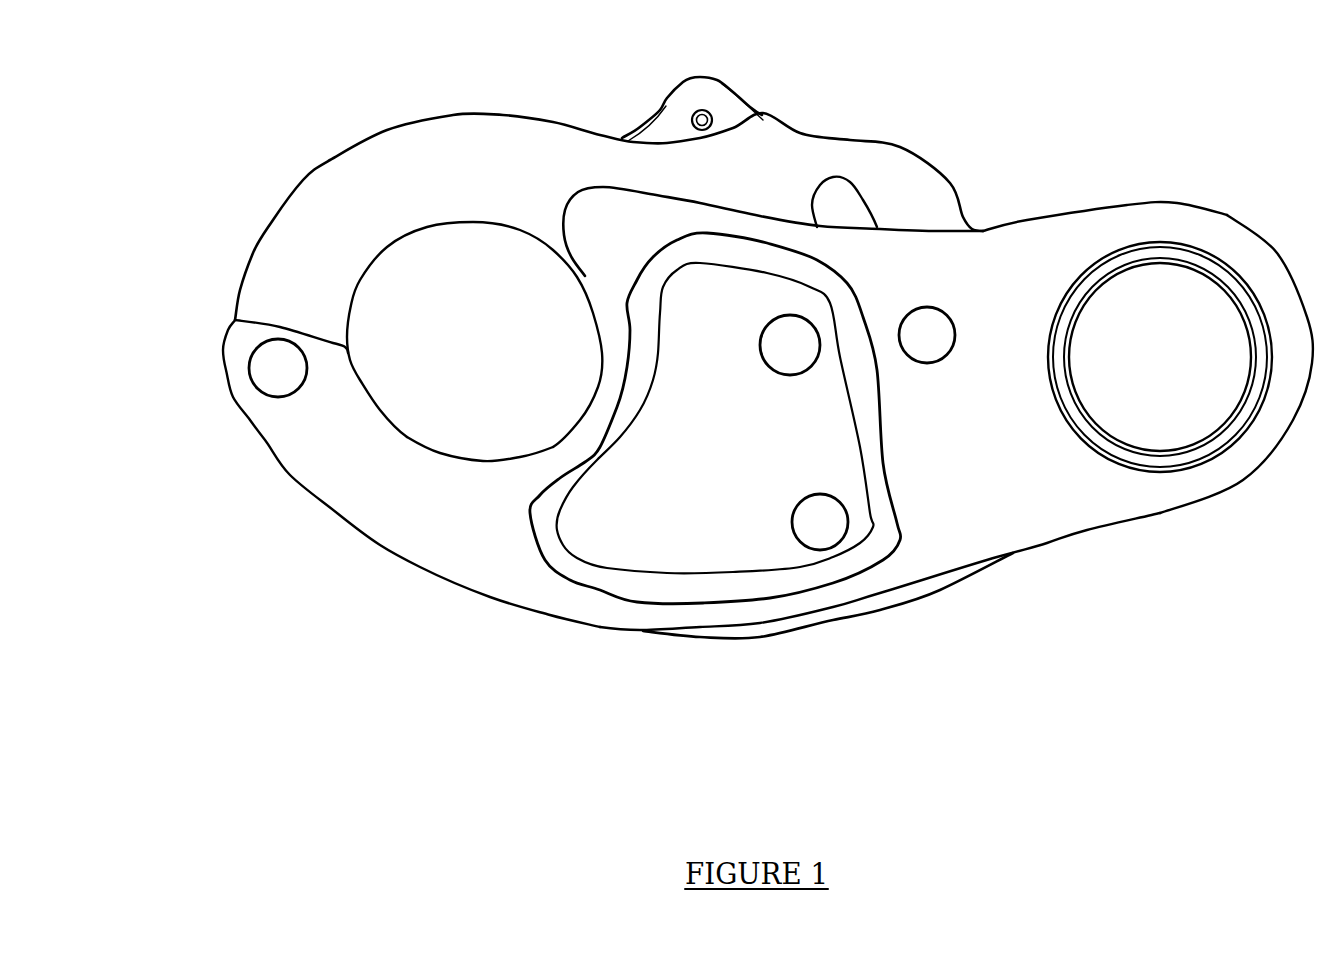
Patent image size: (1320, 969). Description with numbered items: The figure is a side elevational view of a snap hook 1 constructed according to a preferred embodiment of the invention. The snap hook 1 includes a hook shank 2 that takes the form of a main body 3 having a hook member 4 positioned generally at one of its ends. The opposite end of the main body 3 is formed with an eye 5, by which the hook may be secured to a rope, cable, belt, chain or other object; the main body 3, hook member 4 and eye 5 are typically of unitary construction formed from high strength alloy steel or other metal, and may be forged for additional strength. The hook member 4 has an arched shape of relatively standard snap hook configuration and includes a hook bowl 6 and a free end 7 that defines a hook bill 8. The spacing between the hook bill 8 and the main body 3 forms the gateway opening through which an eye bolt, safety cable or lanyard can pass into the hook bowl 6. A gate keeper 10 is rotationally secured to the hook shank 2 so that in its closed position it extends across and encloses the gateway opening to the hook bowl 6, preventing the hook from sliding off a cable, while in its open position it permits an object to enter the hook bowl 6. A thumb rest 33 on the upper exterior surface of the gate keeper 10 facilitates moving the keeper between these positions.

The snap hook 1 is at (1003, 495).
The hook shank 2 is at (935, 432).
The main body 3 is at (987, 229).
The hook member 4 is at (572, 420).
The eye 5 is at (1213, 230).
The hook bowl 6 is at (465, 453).
The free end 7 is at (225, 322).
The hook bill 8 is at (350, 498).
The gate keeper 10 is at (508, 137).
The thumb rest 33 is at (722, 107).